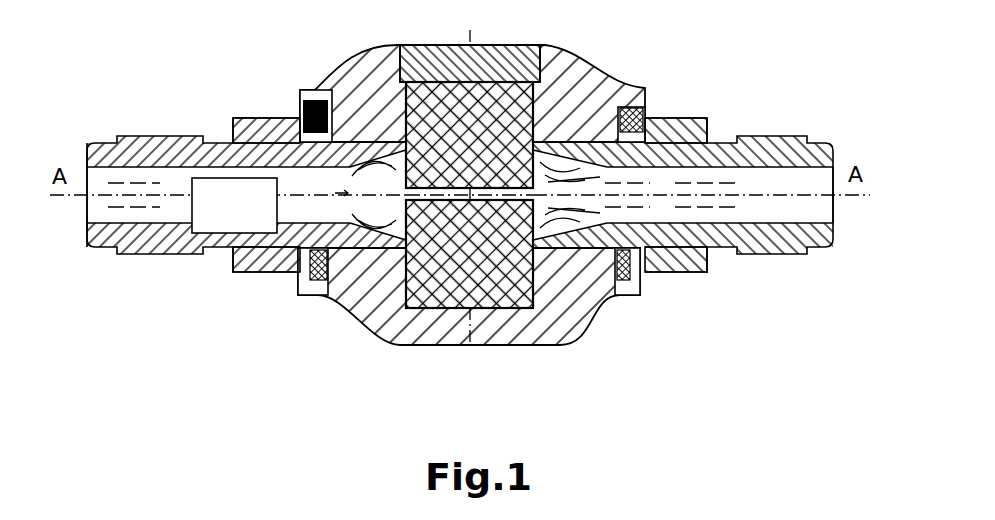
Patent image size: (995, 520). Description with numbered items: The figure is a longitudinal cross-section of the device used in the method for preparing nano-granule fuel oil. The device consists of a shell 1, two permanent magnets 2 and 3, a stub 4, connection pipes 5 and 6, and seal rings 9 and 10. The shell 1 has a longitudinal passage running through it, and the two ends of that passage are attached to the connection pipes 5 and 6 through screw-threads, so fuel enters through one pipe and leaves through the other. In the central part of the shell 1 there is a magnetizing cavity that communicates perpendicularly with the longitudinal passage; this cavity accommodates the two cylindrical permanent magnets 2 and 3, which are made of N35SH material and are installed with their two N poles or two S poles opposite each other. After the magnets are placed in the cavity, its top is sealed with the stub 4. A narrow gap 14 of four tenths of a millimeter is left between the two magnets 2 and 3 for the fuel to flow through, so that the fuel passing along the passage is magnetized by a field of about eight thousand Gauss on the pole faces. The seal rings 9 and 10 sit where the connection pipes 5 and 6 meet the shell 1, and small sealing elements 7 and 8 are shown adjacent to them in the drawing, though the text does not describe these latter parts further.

The shell 1 is at (565, 75).
The permanent magnet 2 is at (469, 135).
The permanent magnet 3 is at (469, 254).
The stub 4 is at (490, 52).
The connection pipe 5 is at (232, 130).
The connection pipe 6 is at (710, 122).
The seal 7 is at (318, 298).
The seal 8 is at (623, 298).
The seal ring 9 is at (293, 282).
The seal ring 10 is at (643, 280).
The gap 14 is at (500, 197).